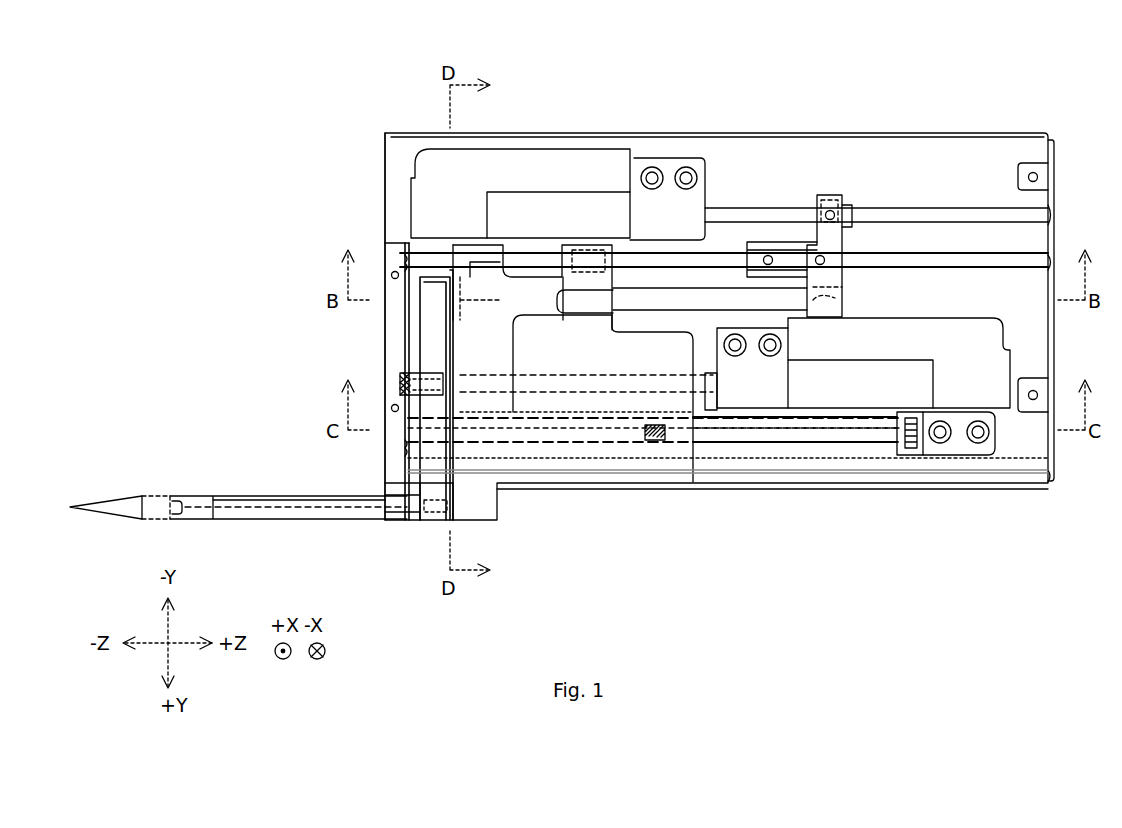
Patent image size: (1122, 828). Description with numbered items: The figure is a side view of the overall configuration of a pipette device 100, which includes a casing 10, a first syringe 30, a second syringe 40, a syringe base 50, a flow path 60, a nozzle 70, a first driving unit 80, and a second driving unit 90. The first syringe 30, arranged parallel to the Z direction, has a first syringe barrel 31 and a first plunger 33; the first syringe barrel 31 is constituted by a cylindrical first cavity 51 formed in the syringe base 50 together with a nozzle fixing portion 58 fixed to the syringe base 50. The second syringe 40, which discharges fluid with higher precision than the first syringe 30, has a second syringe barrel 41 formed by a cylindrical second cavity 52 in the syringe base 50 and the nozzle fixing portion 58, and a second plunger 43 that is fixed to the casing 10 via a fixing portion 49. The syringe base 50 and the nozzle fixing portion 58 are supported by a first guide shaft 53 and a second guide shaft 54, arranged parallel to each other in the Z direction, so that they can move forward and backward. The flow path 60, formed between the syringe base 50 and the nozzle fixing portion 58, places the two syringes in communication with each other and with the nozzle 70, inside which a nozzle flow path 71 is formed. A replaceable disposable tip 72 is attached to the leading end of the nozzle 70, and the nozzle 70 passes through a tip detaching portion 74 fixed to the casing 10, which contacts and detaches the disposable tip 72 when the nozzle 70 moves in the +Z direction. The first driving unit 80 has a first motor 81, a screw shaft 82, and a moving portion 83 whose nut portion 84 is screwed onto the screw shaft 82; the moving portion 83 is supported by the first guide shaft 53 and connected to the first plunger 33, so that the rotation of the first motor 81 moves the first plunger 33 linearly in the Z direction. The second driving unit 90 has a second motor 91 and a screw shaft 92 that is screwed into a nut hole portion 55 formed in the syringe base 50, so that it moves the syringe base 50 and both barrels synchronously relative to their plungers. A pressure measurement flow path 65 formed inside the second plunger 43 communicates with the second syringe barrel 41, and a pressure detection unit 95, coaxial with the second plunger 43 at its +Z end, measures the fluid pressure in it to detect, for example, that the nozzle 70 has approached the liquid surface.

The pipette device 100 is at (760, 70).
The casing 10 is at (918, 133).
The first syringe 30 is at (513, 400).
The first syringe barrel 31 is at (478, 297).
The first plunger 33 is at (836, 302).
The second syringe 40 is at (620, 488).
The second syringe barrel 41 is at (585, 488).
The second plunger 43 is at (795, 470).
The fixing portion 49 is at (948, 455).
The syringe base 50 is at (672, 360).
The first cavity 51 is at (550, 300).
The second cavity 52 is at (545, 488).
The first guide shaft 53 is at (992, 258).
The second guide shaft 54 is at (855, 465).
The nut hole portion 55 is at (495, 508).
The nozzle fixing portion 58 is at (405, 312).
The flow path 60 is at (440, 336).
The pressure measurement flow path 65 is at (748, 470).
The nozzle 70 is at (255, 493).
The nozzle flow path 71 is at (296, 498).
The disposable tip 72 is at (158, 493).
The tip detaching portion 74 is at (388, 361).
The first driving unit 80 is at (566, 133).
The first motor 81 is at (612, 172).
The screw shaft 82 is at (765, 215).
The moving portion 83 is at (826, 195).
The nut portion 84 is at (848, 208).
The second driving unit 90 is at (945, 318).
The second motor 91 is at (924, 340).
The screw shaft 92 is at (705, 440).
The pressure detection unit 95 is at (912, 452).